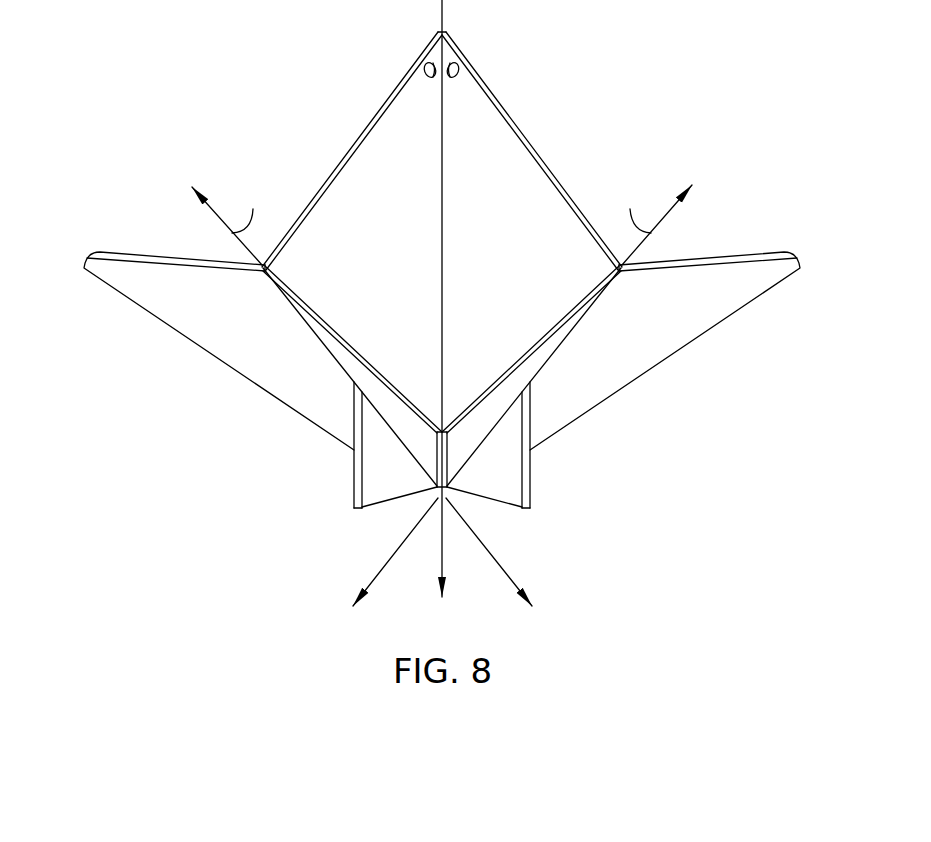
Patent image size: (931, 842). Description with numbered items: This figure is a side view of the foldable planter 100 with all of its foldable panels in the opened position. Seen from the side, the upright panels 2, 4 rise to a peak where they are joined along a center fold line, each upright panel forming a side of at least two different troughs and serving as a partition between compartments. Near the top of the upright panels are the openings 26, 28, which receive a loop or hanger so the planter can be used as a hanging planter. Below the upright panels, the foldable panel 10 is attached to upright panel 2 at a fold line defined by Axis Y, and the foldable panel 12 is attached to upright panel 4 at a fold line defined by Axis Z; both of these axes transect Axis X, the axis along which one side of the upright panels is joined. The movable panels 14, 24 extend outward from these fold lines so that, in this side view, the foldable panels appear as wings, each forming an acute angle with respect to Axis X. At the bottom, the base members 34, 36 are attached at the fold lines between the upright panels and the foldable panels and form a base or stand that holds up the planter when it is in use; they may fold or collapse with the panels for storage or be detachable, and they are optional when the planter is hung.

The planter 100 is at (442, 303).
The upright panel 2 is at (504, 176).
The upright panel 4 is at (380, 182).
The foldable panel 10 is at (533, 367).
The foldable panel 12 is at (352, 368).
The movable panel 14 is at (173, 298).
The movable panel 24 is at (707, 305).
The opening 26 is at (457, 55).
The opening 28 is at (427, 55).
The base member 34 is at (501, 472).
The base member 36 is at (383, 472).